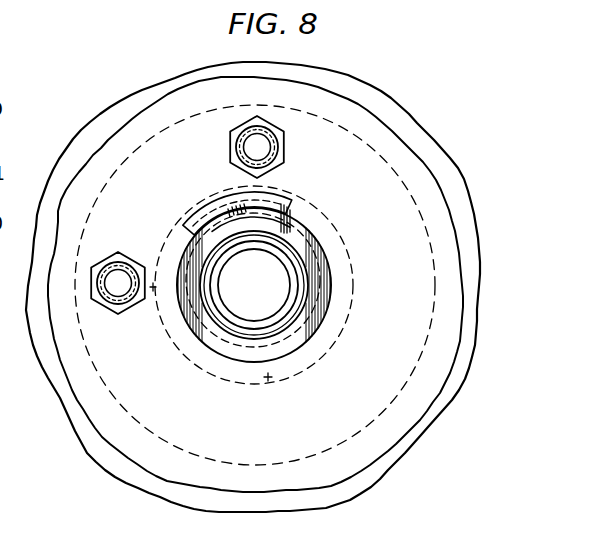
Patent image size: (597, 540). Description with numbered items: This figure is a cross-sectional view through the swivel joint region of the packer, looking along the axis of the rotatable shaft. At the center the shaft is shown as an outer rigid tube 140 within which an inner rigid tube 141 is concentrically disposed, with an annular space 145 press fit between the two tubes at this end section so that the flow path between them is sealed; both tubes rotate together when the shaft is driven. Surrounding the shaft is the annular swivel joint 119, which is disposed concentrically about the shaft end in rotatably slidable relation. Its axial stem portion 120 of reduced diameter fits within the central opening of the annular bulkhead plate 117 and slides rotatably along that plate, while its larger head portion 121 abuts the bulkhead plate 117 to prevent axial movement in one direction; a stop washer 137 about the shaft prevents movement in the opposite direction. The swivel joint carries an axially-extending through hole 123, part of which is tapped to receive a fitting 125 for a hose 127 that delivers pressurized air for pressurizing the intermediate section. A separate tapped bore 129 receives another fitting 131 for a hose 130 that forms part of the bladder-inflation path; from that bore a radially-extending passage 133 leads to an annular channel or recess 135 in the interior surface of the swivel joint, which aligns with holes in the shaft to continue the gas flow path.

The annular bulkhead plate 117 is at (350, 486).
The annular swivel joint 119 is at (447, 93).
The axial stem portion 120 is at (432, 250).
The head portion 121 is at (432, 173).
The axially-extending through hole 123 is at (260, 145).
The fitting 125 is at (268, 132).
The hose 127 is at (277, 167).
The tapped bore 129 is at (117, 283).
The hose 130 is at (127, 262).
The fitting 131 is at (120, 310).
The radially-extending passage 133 is at (251, 290).
The annular channel or recess 135 is at (272, 381).
The stop washer 137 is at (214, 208).
The outer rigid tube 140 is at (313, 333).
The inner rigid tube 141 is at (285, 252).
The annular space 145 is at (303, 278).